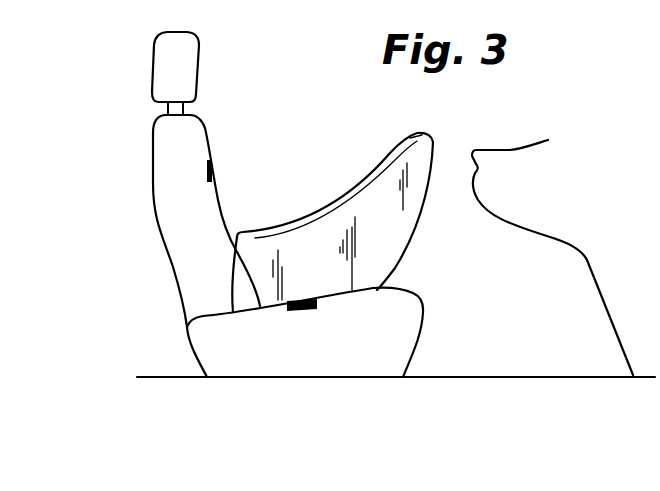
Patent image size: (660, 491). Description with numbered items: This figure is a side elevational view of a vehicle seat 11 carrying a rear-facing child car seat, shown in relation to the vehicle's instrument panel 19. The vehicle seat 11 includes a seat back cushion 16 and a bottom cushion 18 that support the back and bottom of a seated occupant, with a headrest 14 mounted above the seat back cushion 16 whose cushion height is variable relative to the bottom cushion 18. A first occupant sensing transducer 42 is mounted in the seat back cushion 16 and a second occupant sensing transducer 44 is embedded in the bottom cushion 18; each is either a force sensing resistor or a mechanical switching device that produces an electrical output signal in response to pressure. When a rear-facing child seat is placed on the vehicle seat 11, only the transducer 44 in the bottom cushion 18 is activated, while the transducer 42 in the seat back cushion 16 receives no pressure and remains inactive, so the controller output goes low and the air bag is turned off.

The vehicle seat 11 is at (152, 228).
The headrest 14 is at (201, 45).
The seat back cushion 16 is at (193, 143).
The bottom cushion 18 is at (425, 303).
The instrument panel 19 is at (518, 160).
The first occupant sensing transducer 42 is at (207, 165).
The second occupant sensing transducer 44 is at (293, 312).